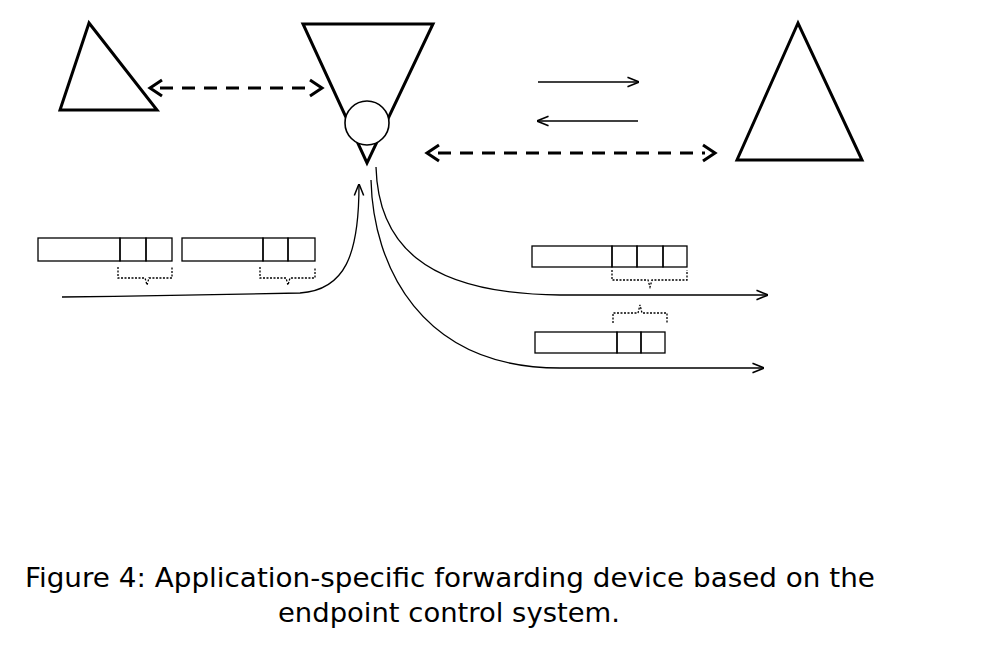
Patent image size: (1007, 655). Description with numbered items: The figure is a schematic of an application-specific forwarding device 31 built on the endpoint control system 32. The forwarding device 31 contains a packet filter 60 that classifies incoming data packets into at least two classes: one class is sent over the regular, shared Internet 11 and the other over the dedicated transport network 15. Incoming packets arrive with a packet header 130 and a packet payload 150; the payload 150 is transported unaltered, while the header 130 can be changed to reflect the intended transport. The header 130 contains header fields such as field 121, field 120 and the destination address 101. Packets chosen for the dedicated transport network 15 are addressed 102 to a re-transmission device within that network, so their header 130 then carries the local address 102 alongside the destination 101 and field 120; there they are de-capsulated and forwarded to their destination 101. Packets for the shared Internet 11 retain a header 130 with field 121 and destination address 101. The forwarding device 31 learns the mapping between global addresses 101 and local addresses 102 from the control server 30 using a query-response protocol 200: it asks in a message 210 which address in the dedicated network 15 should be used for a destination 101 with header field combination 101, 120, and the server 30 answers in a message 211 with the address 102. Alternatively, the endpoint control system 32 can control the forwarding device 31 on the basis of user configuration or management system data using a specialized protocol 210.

The control server 30 is at (799, 91).
The application-specific forwarding device 31 is at (368, 93).
The endpoint control system 32 is at (108, 66).
The packet filter 60 is at (367, 123).
The message 210 is at (394, 77).
The message 211 is at (588, 109).
The query-response protocol 200 is at (571, 147).
The packet payload 150 is at (83, 245).
The header field 121 is at (133, 245).
The header field 120 is at (275, 245).
The destination address 101 is at (152, 245).
The re-transmission device address 102 is at (674, 253).
The packet header 130 is at (288, 287).
The dedicated transport network 15 is at (614, 239).
The regular, shared Internet 11 is at (611, 289).